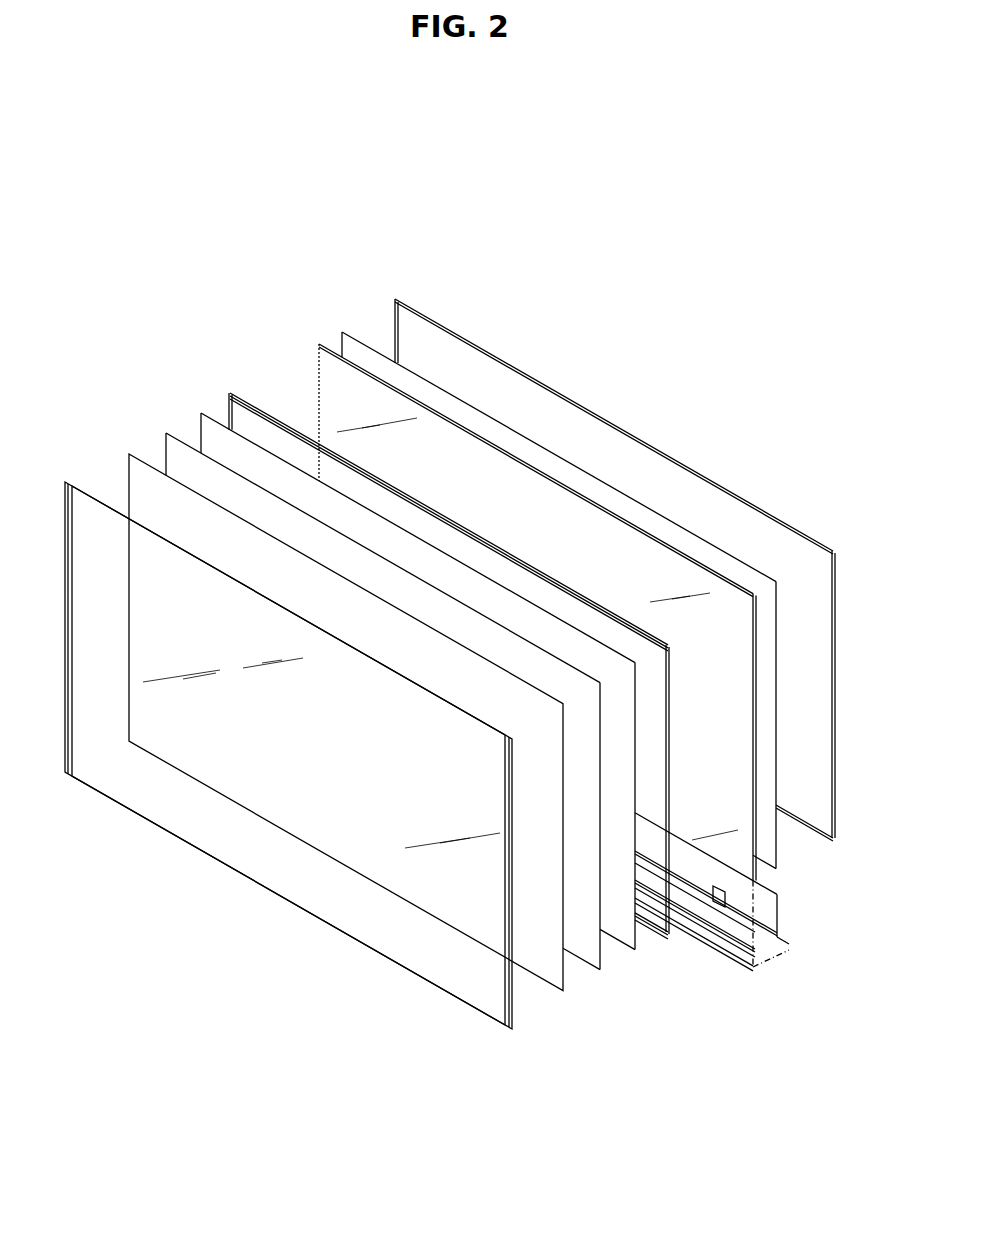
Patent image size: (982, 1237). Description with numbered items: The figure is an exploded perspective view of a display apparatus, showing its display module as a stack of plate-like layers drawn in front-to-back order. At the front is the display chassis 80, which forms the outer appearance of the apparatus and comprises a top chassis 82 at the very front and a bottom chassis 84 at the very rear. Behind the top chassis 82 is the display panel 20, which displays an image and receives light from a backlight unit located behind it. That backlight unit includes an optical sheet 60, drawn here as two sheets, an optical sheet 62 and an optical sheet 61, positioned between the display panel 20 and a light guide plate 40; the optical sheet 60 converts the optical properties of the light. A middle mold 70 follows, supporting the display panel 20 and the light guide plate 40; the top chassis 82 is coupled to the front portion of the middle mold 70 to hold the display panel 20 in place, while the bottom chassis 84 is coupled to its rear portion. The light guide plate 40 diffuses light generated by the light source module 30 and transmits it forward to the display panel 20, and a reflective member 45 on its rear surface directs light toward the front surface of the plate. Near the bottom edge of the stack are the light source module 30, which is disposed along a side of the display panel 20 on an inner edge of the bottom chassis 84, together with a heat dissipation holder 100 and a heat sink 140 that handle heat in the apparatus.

The display chassis 80 is at (217, 287).
The top chassis 82 is at (90, 482).
The bottom chassis 84 is at (385, 302).
The display panel 20 is at (550, 973).
The optical sheet 60 is at (663, 1008).
The optical sheet 62 is at (588, 963).
The optical sheet 61 is at (624, 940).
The middle mold 70 is at (671, 932).
The light guide plate 40 is at (728, 593).
The reflective member 45 is at (772, 842).
The heat sink 140 is at (778, 918).
The heat dissipation holder 100 is at (766, 952).
The light source module 30 is at (748, 980).